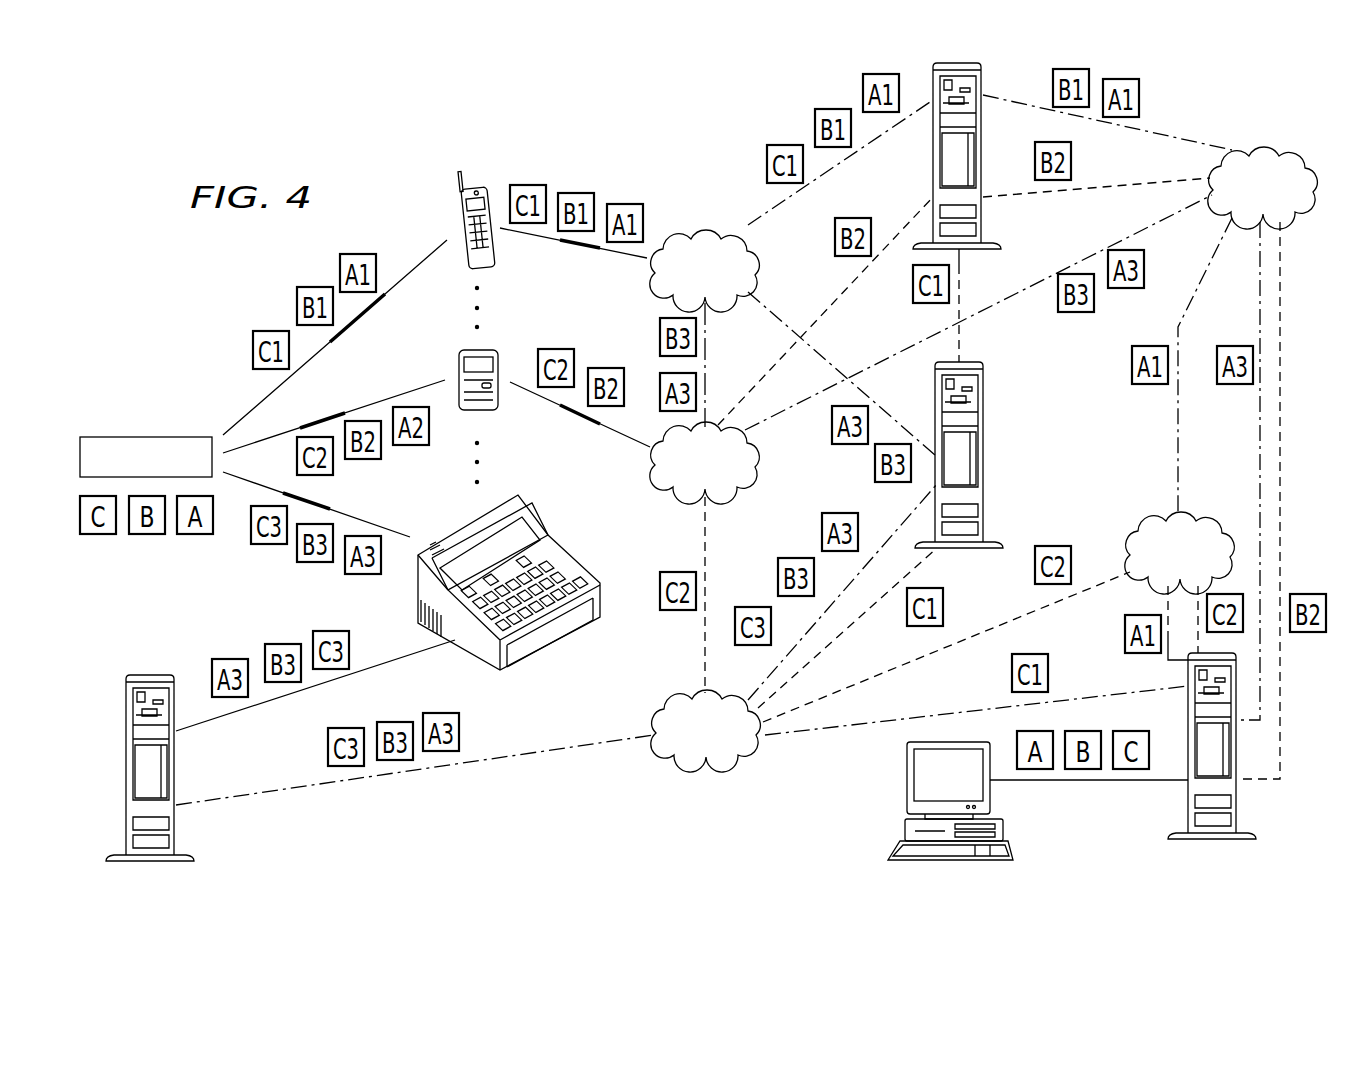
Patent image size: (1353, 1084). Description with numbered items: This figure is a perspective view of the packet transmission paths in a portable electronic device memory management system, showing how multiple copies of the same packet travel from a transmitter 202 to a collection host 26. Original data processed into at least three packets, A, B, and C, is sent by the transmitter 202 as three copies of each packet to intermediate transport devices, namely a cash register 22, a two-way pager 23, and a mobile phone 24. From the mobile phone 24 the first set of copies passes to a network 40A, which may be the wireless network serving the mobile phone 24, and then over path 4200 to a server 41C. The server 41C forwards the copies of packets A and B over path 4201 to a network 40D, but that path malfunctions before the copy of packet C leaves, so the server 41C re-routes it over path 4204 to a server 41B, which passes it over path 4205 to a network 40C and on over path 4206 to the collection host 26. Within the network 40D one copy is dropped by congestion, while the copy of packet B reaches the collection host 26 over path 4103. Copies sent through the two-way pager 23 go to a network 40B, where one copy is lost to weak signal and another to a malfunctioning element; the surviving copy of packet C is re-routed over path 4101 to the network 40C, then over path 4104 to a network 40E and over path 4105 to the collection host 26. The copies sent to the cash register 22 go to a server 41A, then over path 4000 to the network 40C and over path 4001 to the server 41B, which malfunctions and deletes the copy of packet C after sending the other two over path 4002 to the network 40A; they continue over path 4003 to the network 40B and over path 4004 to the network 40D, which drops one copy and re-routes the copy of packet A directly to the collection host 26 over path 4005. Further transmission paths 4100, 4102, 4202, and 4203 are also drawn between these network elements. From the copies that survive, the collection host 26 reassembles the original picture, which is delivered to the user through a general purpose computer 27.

The transmitter 202 is at (137, 437).
The cash register 22 is at (416, 601).
The two-way pager 23 is at (458, 363).
The mobile phone 24 is at (462, 213).
The collection host 26 is at (1188, 805).
The general purpose computer 27 is at (906, 800).
The network 40A is at (697, 237).
The network 40B is at (654, 456).
The network 40C is at (700, 767).
The network 40D is at (1270, 152).
The network 40E is at (1203, 520).
The server 41A is at (150, 675).
The server 41B is at (984, 467).
The server 41C is at (984, 86).
The path 4000 is at (343, 782).
The path 4001 is at (892, 530).
The path 4002 is at (782, 322).
The path 4003 is at (708, 331).
The path 4004 is at (995, 305).
The path 4005 is at (1260, 418).
The communication link 4100 is at (832, 306).
The path 4101 is at (704, 512).
The communication link 4102 is at (1047, 197).
The path 4103 is at (1262, 781).
The path 4104 is at (1064, 598).
The path 4105 is at (1196, 612).
The path 4200 is at (860, 150).
The path 4201 is at (1182, 138).
The communication link 4202 is at (1178, 448).
The communication link 4203 is at (1168, 661).
The path 4204 is at (962, 268).
The path 4205 is at (932, 551).
The path 4206 is at (833, 729).